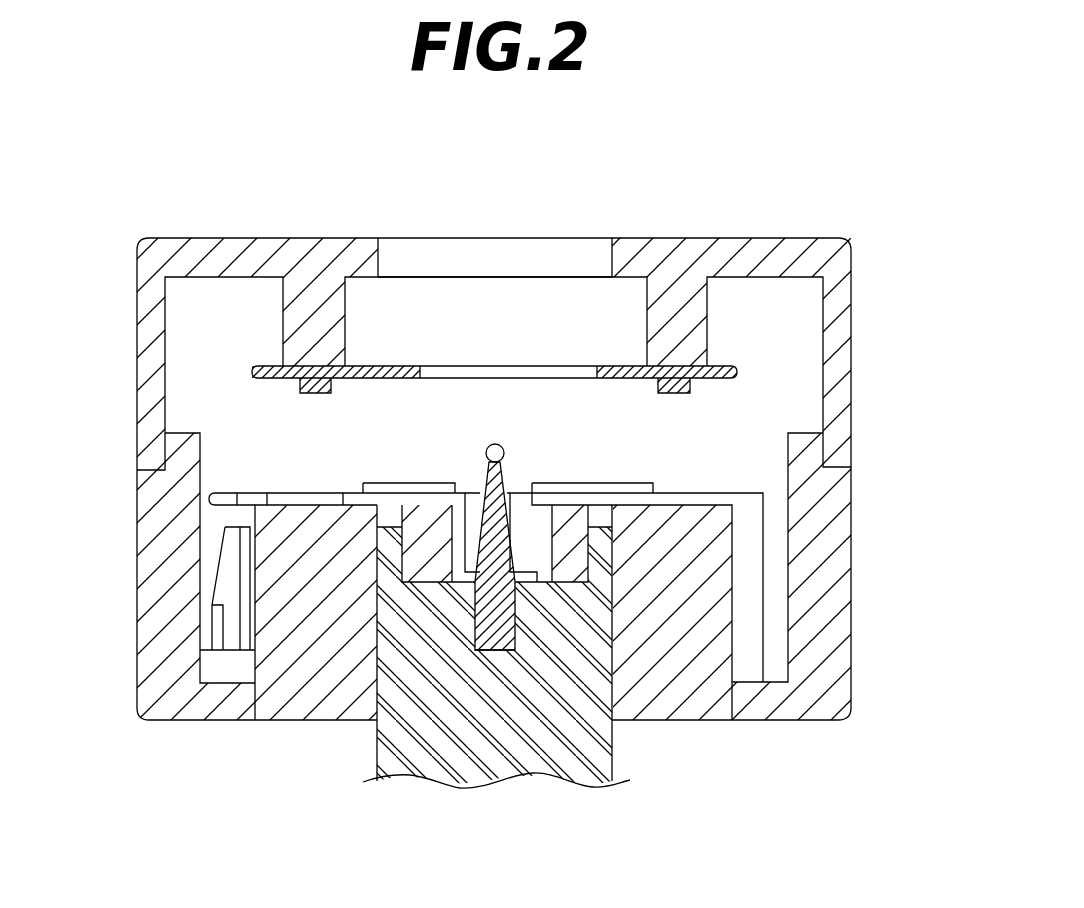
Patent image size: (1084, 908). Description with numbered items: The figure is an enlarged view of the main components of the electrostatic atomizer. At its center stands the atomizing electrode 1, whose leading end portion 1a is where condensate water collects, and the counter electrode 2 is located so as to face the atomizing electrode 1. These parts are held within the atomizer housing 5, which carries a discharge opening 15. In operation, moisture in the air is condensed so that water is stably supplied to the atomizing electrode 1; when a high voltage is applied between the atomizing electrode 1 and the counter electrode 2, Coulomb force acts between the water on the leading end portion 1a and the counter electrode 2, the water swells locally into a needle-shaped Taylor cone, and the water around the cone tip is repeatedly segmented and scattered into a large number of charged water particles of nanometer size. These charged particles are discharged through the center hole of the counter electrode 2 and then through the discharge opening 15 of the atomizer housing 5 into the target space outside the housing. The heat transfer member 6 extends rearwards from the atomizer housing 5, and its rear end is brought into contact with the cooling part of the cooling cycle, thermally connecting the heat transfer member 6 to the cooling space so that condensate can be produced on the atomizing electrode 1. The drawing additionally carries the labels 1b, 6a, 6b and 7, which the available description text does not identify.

The atomizing electrode 1 is at (503, 515).
The leading end portion 1a is at (498, 444).
The pin lower end 1b is at (497, 642).
The counter electrode 2 is at (385, 366).
The atomizer housing 5 is at (137, 397).
The heat transfer member 6 is at (576, 778).
The hub recess 6a is at (578, 578).
The hub bore 6b is at (527, 570).
The base 7 is at (727, 705).
The discharge opening 15 is at (449, 250).